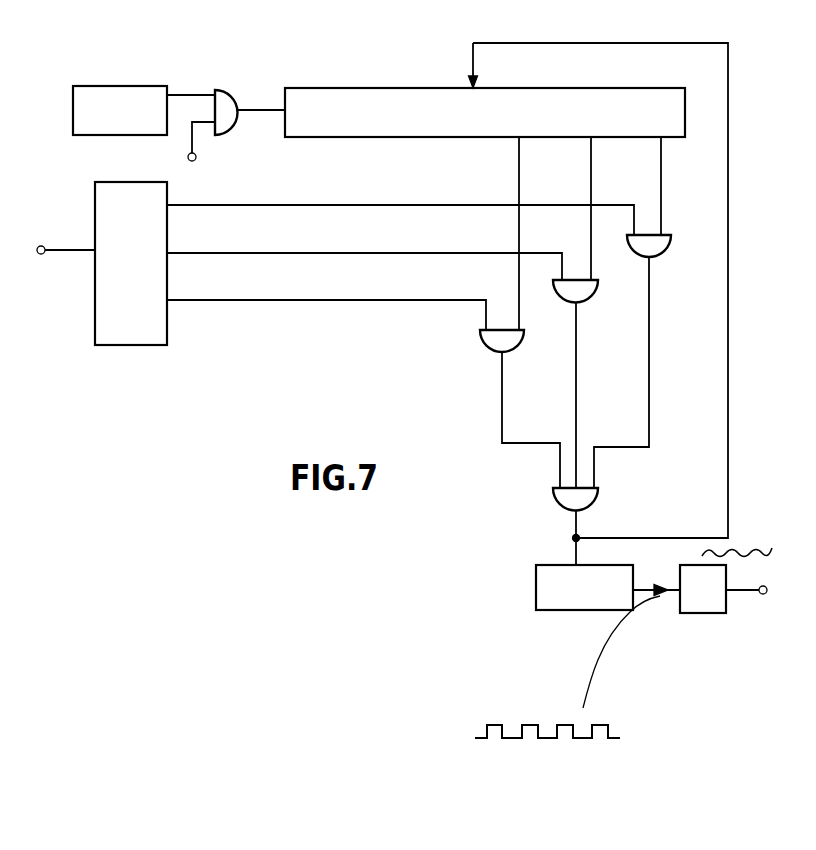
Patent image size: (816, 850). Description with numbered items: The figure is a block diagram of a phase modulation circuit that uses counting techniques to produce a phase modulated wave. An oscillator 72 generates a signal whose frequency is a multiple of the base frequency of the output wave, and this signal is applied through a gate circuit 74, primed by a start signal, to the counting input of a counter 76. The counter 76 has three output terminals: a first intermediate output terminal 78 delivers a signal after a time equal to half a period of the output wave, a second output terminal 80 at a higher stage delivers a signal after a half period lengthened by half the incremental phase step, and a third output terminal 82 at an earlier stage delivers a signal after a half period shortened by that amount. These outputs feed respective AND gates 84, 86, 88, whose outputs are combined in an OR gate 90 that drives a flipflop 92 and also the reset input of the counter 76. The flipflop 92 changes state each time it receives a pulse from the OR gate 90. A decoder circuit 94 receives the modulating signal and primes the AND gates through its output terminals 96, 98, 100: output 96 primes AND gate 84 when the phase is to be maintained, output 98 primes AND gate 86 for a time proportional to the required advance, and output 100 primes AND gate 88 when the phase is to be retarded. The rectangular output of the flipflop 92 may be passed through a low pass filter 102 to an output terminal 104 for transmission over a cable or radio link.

The oscillator 72 is at (125, 82).
The gate circuit 74 is at (232, 86).
The counter 76 is at (352, 86).
The first intermediate output terminal 78 is at (593, 160).
The second output terminal 80 is at (663, 162).
The third output terminal 82 is at (521, 160).
The AND gate 84 is at (584, 292).
The AND gate 86 is at (658, 247).
The AND gate 88 is at (511, 342).
The OR gate 90 is at (600, 503).
The flipflop 92 is at (536, 583).
The decoder circuit 94 is at (134, 333).
The decoder output terminal 96 is at (198, 250).
The decoder output terminal 98 is at (207, 201).
The decoder output terminal 100 is at (200, 298).
The low pass filter 102 is at (693, 607).
The output terminal 104 is at (752, 565).